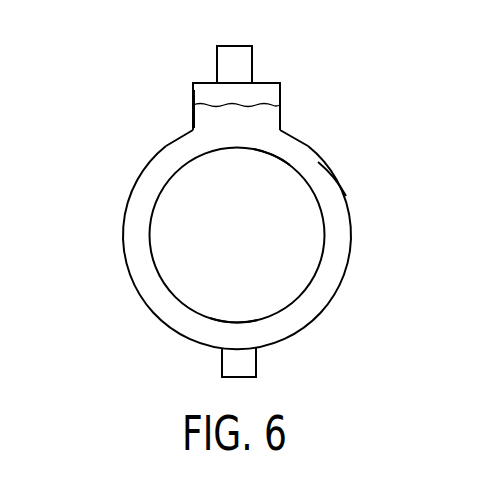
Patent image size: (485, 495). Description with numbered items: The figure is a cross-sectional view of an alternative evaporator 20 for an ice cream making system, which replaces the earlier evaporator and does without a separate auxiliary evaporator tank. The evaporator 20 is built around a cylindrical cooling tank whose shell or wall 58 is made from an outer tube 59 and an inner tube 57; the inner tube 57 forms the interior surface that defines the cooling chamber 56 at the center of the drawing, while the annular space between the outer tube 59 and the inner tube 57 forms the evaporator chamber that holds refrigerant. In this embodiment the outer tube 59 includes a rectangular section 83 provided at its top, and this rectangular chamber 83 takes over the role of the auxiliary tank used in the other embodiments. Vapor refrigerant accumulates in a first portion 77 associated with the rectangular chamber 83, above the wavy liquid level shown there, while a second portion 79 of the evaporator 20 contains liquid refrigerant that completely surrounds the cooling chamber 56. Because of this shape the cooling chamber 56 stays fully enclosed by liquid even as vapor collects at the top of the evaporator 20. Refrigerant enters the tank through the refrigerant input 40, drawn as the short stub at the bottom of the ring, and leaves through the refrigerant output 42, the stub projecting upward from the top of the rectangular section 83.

The evaporator 20 is at (221, 212).
The refrigerant input 40 is at (222, 366).
The refrigerant output 42 is at (253, 60).
The cooling chamber 56 is at (253, 248).
The inner tube 57 is at (233, 322).
The wall 58 is at (267, 153).
The outer tube 59 is at (332, 167).
The first portion 77 is at (181, 107).
The second portion 79 is at (128, 182).
The rectangular section 83 is at (280, 88).